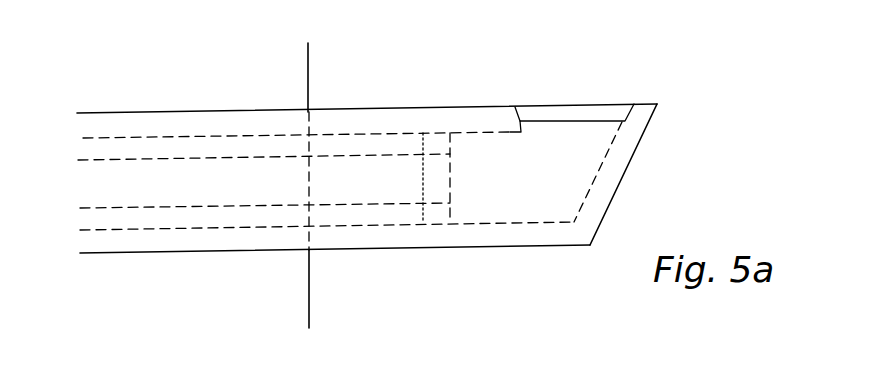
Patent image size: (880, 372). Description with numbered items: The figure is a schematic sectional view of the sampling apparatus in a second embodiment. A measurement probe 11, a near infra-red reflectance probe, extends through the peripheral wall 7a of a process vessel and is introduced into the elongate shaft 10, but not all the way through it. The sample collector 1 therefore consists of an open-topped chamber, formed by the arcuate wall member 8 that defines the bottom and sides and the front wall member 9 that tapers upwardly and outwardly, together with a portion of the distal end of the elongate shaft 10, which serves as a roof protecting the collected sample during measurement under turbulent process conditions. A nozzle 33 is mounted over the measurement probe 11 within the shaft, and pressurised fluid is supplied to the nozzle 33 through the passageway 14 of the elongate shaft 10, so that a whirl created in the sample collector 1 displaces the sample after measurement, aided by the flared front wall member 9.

The sample collector 1 is at (375, 177).
The peripheral wall 7a is at (310, 52).
The arcuate wall member 8 is at (493, 237).
The front wall member 9 is at (612, 182).
The elongate shaft 10 is at (99, 125).
The measurement probe 11 is at (242, 183).
The passageway 14 is at (325, 147).
The nozzle 33 is at (438, 140).